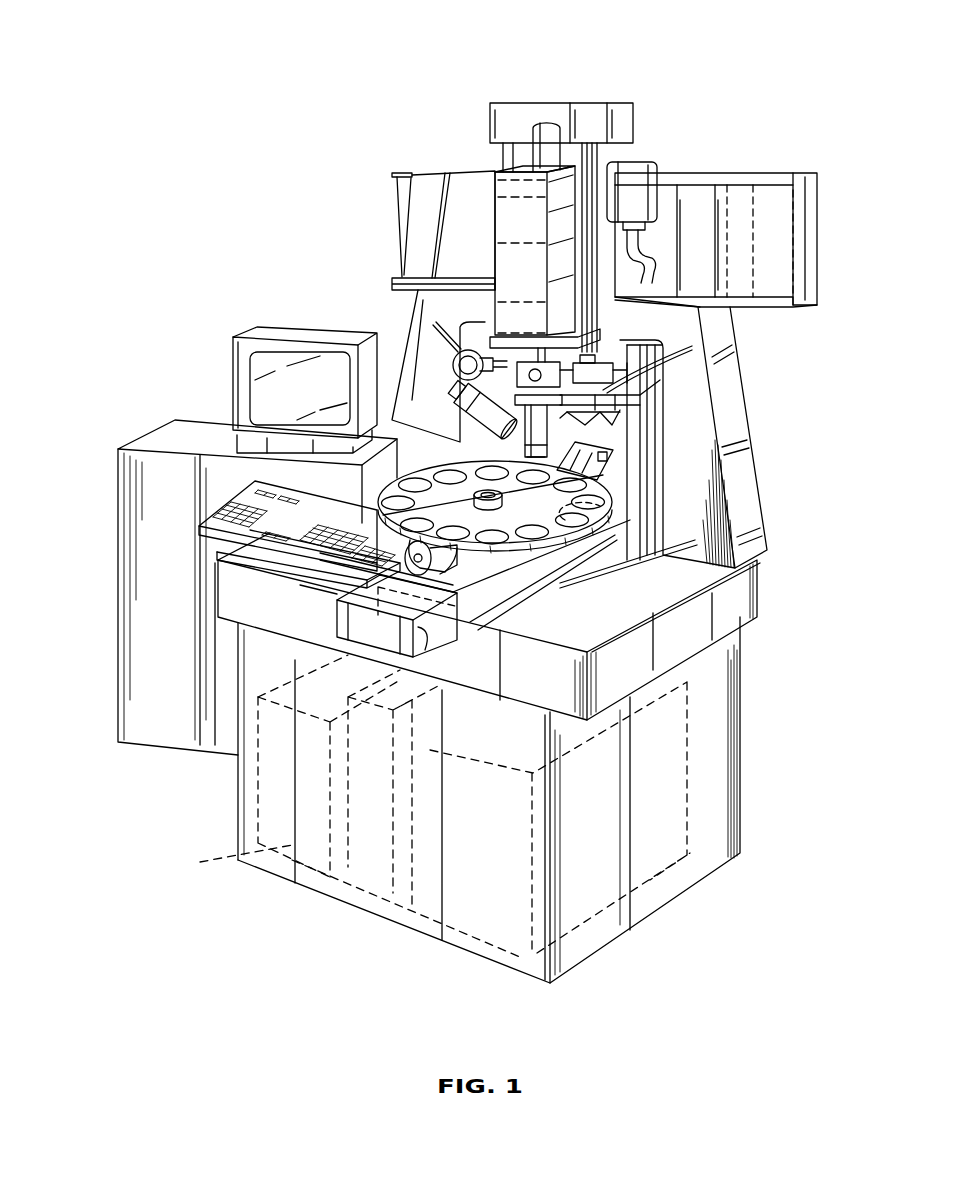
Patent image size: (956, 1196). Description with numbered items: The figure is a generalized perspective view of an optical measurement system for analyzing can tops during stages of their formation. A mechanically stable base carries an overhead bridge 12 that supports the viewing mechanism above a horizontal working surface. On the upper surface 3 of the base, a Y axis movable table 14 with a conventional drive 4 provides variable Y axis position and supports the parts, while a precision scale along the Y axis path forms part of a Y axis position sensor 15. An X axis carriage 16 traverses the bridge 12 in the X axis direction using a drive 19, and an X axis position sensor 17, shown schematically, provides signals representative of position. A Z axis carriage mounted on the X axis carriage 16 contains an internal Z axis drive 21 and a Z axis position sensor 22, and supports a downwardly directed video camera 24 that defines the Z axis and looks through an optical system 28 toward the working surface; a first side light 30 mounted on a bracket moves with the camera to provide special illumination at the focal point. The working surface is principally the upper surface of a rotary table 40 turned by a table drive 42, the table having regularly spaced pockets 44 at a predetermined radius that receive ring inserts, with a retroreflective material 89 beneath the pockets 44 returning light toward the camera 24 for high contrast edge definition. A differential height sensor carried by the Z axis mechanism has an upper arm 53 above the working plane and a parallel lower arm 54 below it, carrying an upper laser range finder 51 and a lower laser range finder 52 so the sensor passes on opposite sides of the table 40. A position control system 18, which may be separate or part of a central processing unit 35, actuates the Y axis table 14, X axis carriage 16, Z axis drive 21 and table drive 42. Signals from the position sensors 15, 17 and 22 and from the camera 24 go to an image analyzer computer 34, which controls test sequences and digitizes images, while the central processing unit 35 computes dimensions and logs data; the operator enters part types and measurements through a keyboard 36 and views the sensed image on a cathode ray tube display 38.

The X axis position sensor 17 is at (517, 113).
The X axis drive 19 is at (770, 220).
The Z axis drive 21 is at (505, 205).
The X axis carriage 16 is at (688, 203).
The video camera 24 is at (512, 273).
The cathode ray tube display 38 is at (289, 362).
The bridge 12 is at (447, 310).
The Z axis position sensor 22 is at (597, 311).
The first side light 30 is at (460, 412).
The optical system 28 is at (465, 439).
The upper laser range finder 51 is at (613, 418).
The upper arm 53 is at (692, 352).
The lower arm 54 is at (648, 463).
The keyboard 36 is at (237, 503).
The lower laser range finder 52 is at (620, 480).
The retroreflective material 89 is at (590, 516).
The pockets 44 is at (598, 560).
The rotary table 40 is at (600, 520).
The upper surface 3 is at (248, 553).
The Y axis movable table 14 is at (367, 590).
The table drive 42 is at (400, 630).
The drive 4 is at (497, 600).
The Y axis position sensor 15 is at (400, 630).
The image analyzer computer 34 is at (287, 843).
The central processing unit 35 is at (367, 873).
The position control system 18 is at (503, 927).